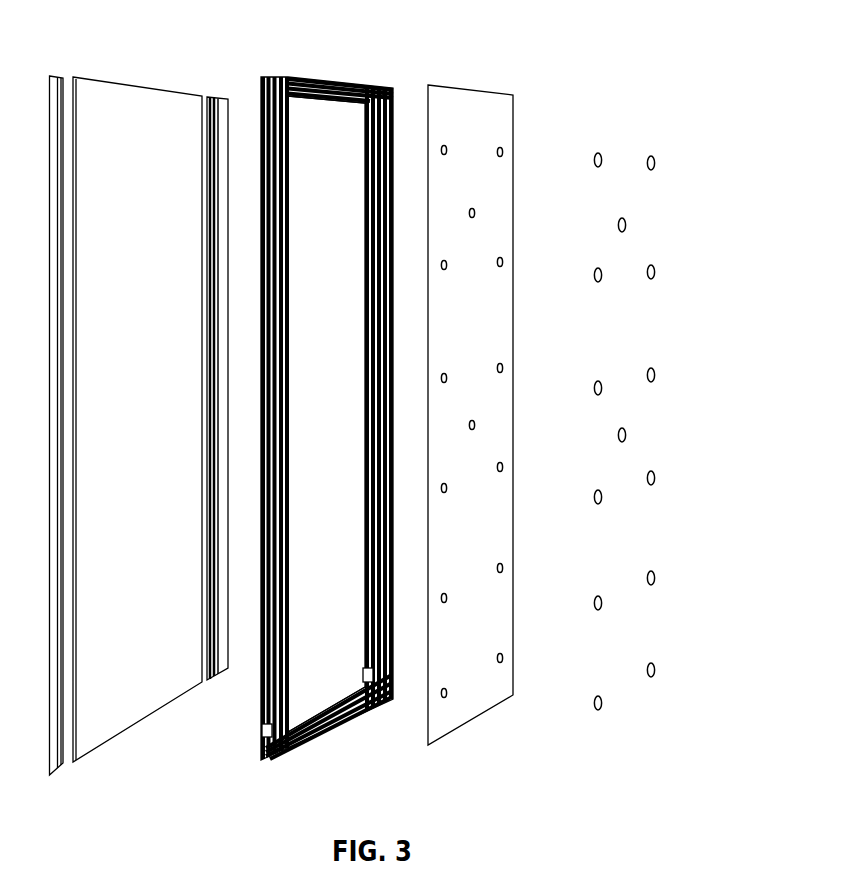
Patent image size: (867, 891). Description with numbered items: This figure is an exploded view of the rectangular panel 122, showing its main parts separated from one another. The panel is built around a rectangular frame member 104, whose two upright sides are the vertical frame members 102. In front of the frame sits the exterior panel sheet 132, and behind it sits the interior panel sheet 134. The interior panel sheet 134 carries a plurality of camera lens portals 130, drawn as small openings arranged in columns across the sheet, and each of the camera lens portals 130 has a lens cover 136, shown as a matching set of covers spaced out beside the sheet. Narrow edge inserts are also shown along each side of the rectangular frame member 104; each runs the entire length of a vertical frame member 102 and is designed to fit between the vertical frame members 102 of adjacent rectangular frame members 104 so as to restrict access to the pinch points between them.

The vertical frame member 102 is at (290, 341).
The rectangular frame member 104 is at (327, 386).
The rectangular panel 122 is at (600, 72).
The camera lens portals 130 is at (503, 259).
The exterior panel sheet 132 is at (141, 84).
The interior panel sheet 134 is at (501, 381).
The lens cover 136 is at (655, 161).